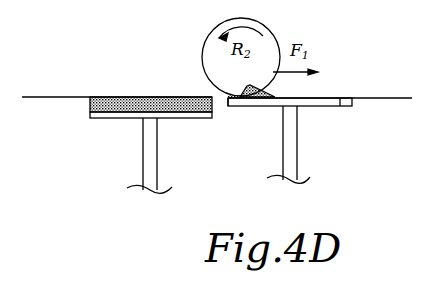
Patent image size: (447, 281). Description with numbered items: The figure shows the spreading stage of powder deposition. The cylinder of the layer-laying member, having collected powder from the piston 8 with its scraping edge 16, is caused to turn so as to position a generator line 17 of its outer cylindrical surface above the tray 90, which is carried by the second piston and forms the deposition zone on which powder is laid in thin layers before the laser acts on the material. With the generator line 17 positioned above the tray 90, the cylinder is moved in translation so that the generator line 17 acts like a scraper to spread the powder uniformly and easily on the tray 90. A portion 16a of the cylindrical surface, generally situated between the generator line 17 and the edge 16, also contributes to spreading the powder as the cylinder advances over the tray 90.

The piston 8 is at (97, 113).
The edge 16 is at (258, 100).
The portion of the cylindrical surface 16a is at (250, 94).
The generator line 17 is at (234, 112).
The tray 90 is at (343, 107).